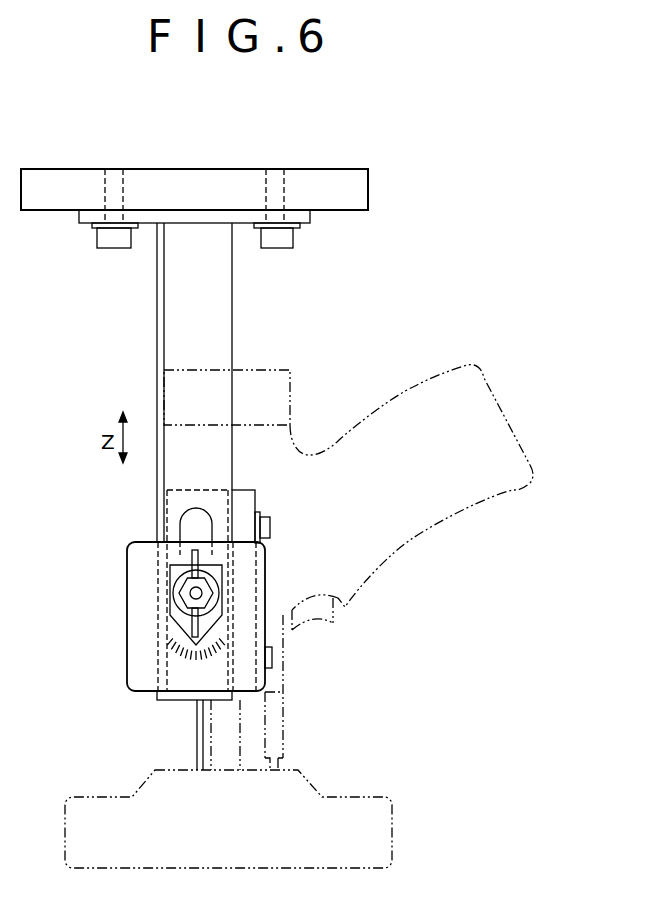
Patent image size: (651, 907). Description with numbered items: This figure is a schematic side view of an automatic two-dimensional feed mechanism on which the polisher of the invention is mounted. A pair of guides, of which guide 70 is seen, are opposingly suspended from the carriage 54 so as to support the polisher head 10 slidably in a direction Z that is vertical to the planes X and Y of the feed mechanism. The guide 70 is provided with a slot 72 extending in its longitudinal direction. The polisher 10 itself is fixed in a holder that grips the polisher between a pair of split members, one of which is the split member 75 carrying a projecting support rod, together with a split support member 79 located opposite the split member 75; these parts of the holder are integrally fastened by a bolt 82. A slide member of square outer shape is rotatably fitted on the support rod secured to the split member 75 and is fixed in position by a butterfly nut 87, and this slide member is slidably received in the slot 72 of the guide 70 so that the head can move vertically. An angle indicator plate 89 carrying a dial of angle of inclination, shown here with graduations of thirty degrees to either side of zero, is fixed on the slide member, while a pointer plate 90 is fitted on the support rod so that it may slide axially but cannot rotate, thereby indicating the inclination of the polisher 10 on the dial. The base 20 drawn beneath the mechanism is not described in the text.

The carriage 54 is at (323, 178).
The guide 70 is at (171, 312).
The polisher head 10 is at (390, 396).
The split member 75 is at (208, 490).
The slot 72 is at (180, 527).
The split support member 79 is at (250, 503).
The bolt 82 is at (271, 527).
The angle indicator plate 89 is at (133, 555).
The butterfly nut 87 is at (190, 593).
The pointer plate 90 is at (181, 622).
The base 20 is at (323, 788).